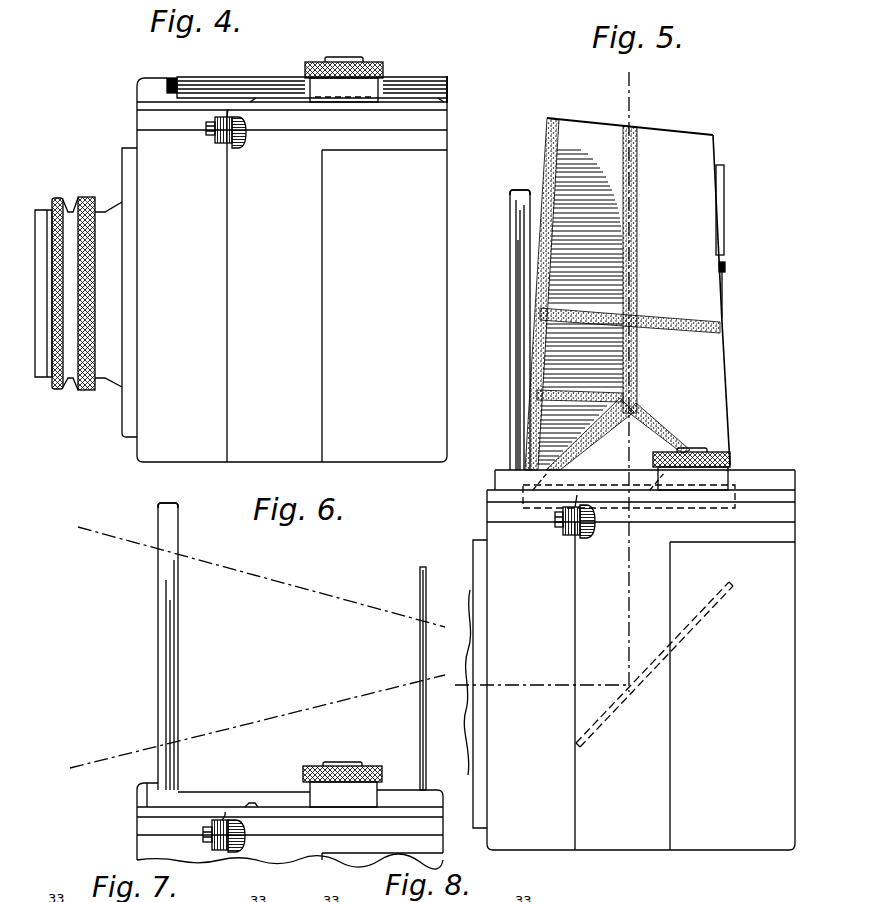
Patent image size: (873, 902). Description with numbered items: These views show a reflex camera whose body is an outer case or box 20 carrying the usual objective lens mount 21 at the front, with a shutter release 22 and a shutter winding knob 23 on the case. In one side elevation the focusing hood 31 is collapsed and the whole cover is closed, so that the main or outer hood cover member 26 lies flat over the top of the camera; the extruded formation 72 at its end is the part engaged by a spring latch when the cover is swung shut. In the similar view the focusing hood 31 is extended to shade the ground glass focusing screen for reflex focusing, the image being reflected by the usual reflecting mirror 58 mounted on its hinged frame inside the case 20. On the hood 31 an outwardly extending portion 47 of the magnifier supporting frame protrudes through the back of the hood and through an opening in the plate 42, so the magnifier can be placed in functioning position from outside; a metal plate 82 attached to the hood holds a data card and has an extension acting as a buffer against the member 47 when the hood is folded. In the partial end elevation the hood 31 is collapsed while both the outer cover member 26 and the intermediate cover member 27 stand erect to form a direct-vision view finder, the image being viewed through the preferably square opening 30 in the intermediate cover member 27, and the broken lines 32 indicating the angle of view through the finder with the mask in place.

In FIG. 4, the outer case or box 20 is at (140, 138).
In FIG. 5, the outer case or box 20 is at (655, 843).
In FIG. 4, the objective lens mount 21 is at (60, 388).
In FIG. 5, the objective lens mount 21 is at (466, 610).
In FIG. 4, the shutter release 22 is at (213, 138).
In FIG. 5, the shutter release 22 is at (560, 531).
In FIG. 6, the shutter release 22 is at (203, 840).
In FIG. 4, the shutter winding knob 23 is at (372, 63).
In FIG. 5, the shutter winding knob 23 is at (733, 460).
In FIG. 6, the shutter winding knob 23 is at (376, 761).
In FIG. 4, the outer hood cover member 26 is at (417, 84).
In FIG. 5, the outer hood cover member 26 is at (512, 213).
In FIG. 6, the outer hood cover member 26 is at (180, 614).
In FIG. 6, the intermediate cover member 27 is at (420, 590).
In FIG. 6, the square opening 30 is at (420, 650).
In FIG. 5, the focusing hood 31 is at (712, 150).
In FIG. 6, the broken lines 32 is at (296, 587).
In FIG. 5, the plate 42 is at (731, 390).
In FIG. 5, the outwardly extending portion 47 is at (733, 329).
In FIG. 5, the reflecting mirror 58 is at (688, 634).
In FIG. 4, the extruded formation 72 is at (450, 89).
In FIG. 5, the extruded formation 72 is at (521, 189).
In FIG. 6, the extruded formation 72 is at (169, 502).
In FIG. 5, the metal plate 82 is at (719, 175).